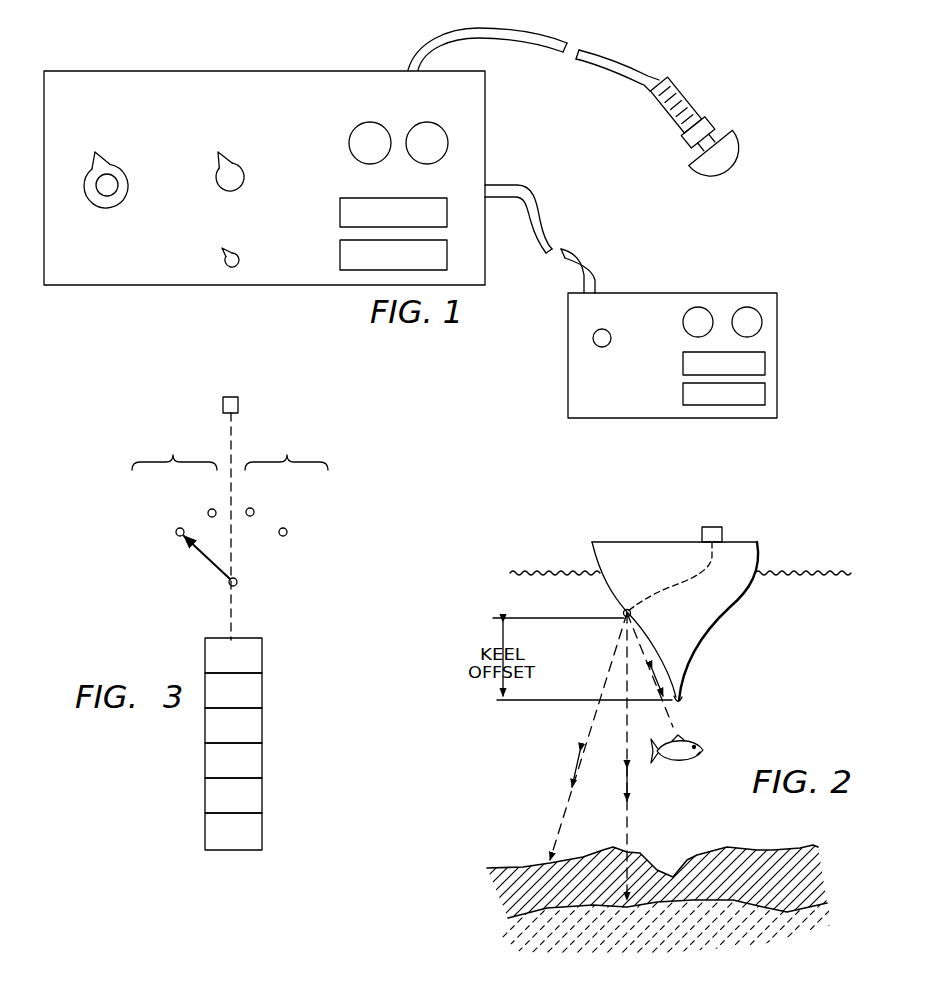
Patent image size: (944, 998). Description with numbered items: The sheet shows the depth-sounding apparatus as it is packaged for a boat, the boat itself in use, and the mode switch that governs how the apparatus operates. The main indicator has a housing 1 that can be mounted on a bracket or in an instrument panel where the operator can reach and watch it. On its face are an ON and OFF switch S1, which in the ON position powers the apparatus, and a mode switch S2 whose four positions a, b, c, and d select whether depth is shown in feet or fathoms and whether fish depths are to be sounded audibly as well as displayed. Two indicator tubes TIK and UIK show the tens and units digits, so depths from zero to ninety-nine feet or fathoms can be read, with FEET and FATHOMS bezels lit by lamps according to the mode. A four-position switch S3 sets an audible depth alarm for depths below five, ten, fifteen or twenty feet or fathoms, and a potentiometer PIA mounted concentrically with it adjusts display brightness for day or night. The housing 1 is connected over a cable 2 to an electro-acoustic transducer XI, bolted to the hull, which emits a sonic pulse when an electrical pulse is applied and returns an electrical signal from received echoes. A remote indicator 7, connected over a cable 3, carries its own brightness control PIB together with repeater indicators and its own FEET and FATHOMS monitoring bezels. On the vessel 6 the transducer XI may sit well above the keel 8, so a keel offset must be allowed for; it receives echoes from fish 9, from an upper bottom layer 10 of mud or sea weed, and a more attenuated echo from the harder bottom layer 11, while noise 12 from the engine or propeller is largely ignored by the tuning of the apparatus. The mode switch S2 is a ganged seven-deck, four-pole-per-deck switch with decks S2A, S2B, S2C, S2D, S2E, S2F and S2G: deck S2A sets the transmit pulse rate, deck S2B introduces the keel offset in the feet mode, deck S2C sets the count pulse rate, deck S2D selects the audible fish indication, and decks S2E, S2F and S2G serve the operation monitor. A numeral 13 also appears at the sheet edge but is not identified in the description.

In FIG. 1, the housing 1 is at (277, 66).
In FIG. 2, the housing 1 is at (712, 527).
In FIG. 1, the cable 2 is at (583, 62).
In FIG. 2, the cable 2 is at (670, 582).
In FIG. 1, the cable 3 is at (549, 239).
In FIG. 2, the vessel 6 is at (758, 557).
In FIG. 1, the remote indicator 7 is at (677, 291).
In FIG. 2, the keel 8 is at (683, 700).
In FIG. 2, the fish 9 is at (705, 748).
In FIG. 2, the upper layer 10 is at (760, 851).
In FIG. 2, the bottom layer 11 is at (815, 907).
In FIG. 2, the noise 12 is at (586, 743).
In FIG. 3, the reference numeral 13 is at (253, 991).
In FIG. 1, the electro-acoustic transducer XI is at (734, 141).
In FIG. 2, the electro-acoustic transducer XI is at (620, 617).
In FIG. 1, the ON and OFF switch S1 is at (239, 262).
In FIG. 1, the mode switch S2 is at (244, 181).
In FIG. 3, the mode switch S2 is at (230, 508).
In FIG. 3, the switch deck S2A is at (228, 565).
In FIG. 3, the switch deck S2B is at (233, 655).
In FIG. 3, the switch deck S2C is at (233, 690).
In FIG. 3, the switch deck S2D is at (233, 725).
In FIG. 3, the switch deck S2E is at (233, 760).
In FIG. 3, the switch deck S2F is at (233, 795).
In FIG. 3, the switch deck S2G is at (233, 831).
In FIG. 1, the four-position switch S3 is at (128, 190).
In FIG. 1, the potentiometer PIA is at (107, 196).
In FIG. 1, the brightness control PIB is at (608, 331).
In FIG. 1, the indicator tube TIK is at (384, 128).
In FIG. 1, the indicator tube UIK is at (443, 128).
In FIG. 3, the switch position a is at (177, 536).
In FIG. 3, the switch position b is at (215, 517).
In FIG. 3, the switch position c is at (248, 516).
In FIG. 3, the switch position d is at (283, 536).